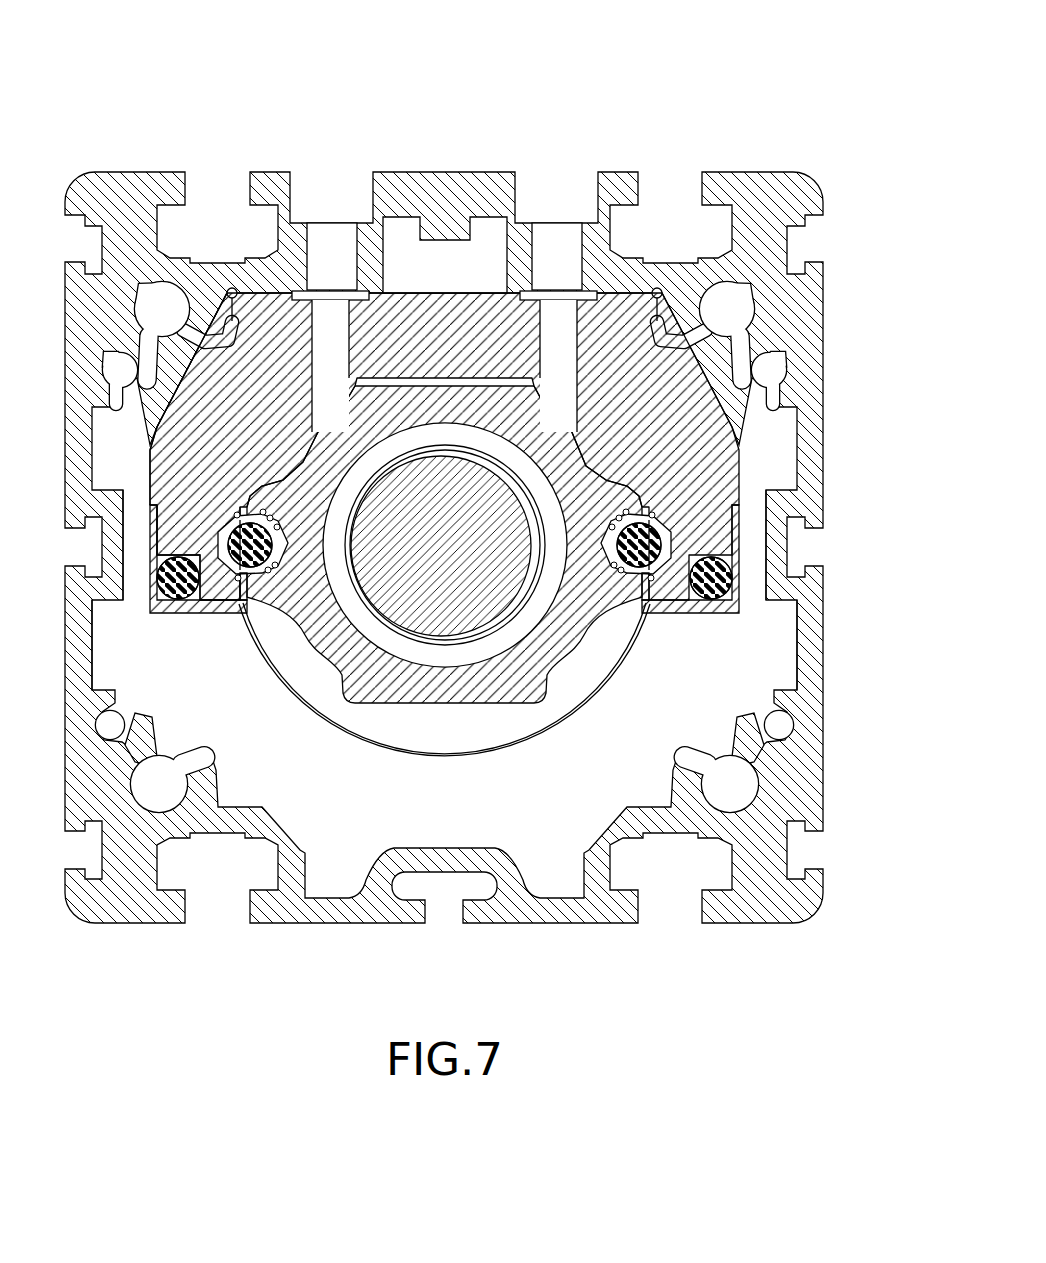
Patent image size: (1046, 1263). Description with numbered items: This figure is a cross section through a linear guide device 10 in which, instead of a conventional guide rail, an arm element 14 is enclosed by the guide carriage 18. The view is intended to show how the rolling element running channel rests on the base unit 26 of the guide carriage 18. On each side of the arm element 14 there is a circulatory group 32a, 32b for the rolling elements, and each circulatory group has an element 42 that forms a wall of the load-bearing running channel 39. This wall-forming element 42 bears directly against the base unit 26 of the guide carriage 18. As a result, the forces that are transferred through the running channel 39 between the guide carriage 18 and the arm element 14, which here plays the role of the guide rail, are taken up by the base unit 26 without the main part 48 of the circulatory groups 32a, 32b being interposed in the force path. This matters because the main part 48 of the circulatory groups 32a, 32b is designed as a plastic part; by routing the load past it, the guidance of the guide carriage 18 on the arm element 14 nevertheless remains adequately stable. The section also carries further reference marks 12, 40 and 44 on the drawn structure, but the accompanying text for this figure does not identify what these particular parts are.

The linear guide device 10 is at (473, 508).
The outer housing frame 12 is at (299, 912).
The arm element 14 is at (553, 650).
The guide carriage 18 is at (738, 417).
The base unit 26 is at (168, 444).
The circulatory group 32a is at (184, 636).
The circulatory group 32b is at (716, 627).
The load-bearing running channel 39 is at (253, 562).
The seal ring 40 is at (263, 585).
The running channel wall element 42 is at (242, 593).
The secondary seal ring 44 is at (161, 590).
The main part 48 is at (157, 593).